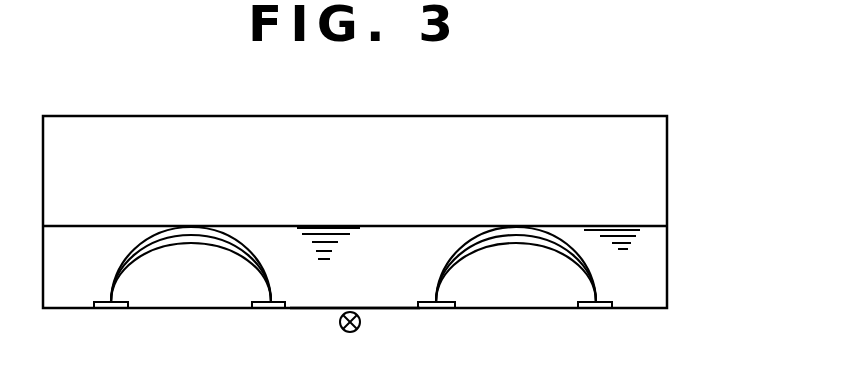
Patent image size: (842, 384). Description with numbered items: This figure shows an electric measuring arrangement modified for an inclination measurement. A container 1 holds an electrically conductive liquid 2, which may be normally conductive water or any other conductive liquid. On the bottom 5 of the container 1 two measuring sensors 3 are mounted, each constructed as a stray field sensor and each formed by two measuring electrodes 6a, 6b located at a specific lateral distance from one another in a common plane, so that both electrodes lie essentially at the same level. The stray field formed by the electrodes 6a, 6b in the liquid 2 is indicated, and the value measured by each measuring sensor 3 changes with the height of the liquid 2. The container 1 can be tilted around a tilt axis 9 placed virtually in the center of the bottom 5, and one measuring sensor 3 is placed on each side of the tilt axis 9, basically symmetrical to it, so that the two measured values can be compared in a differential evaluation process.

The container 1 is at (667, 129).
The electrically conductive liquid 2 is at (660, 265).
The measuring sensor 3 is at (270, 315).
The bottom 5 is at (322, 308).
The measuring electrode 6a is at (282, 305).
The measuring electrode 6b is at (108, 304).
The tilt axis 9 is at (359, 331).